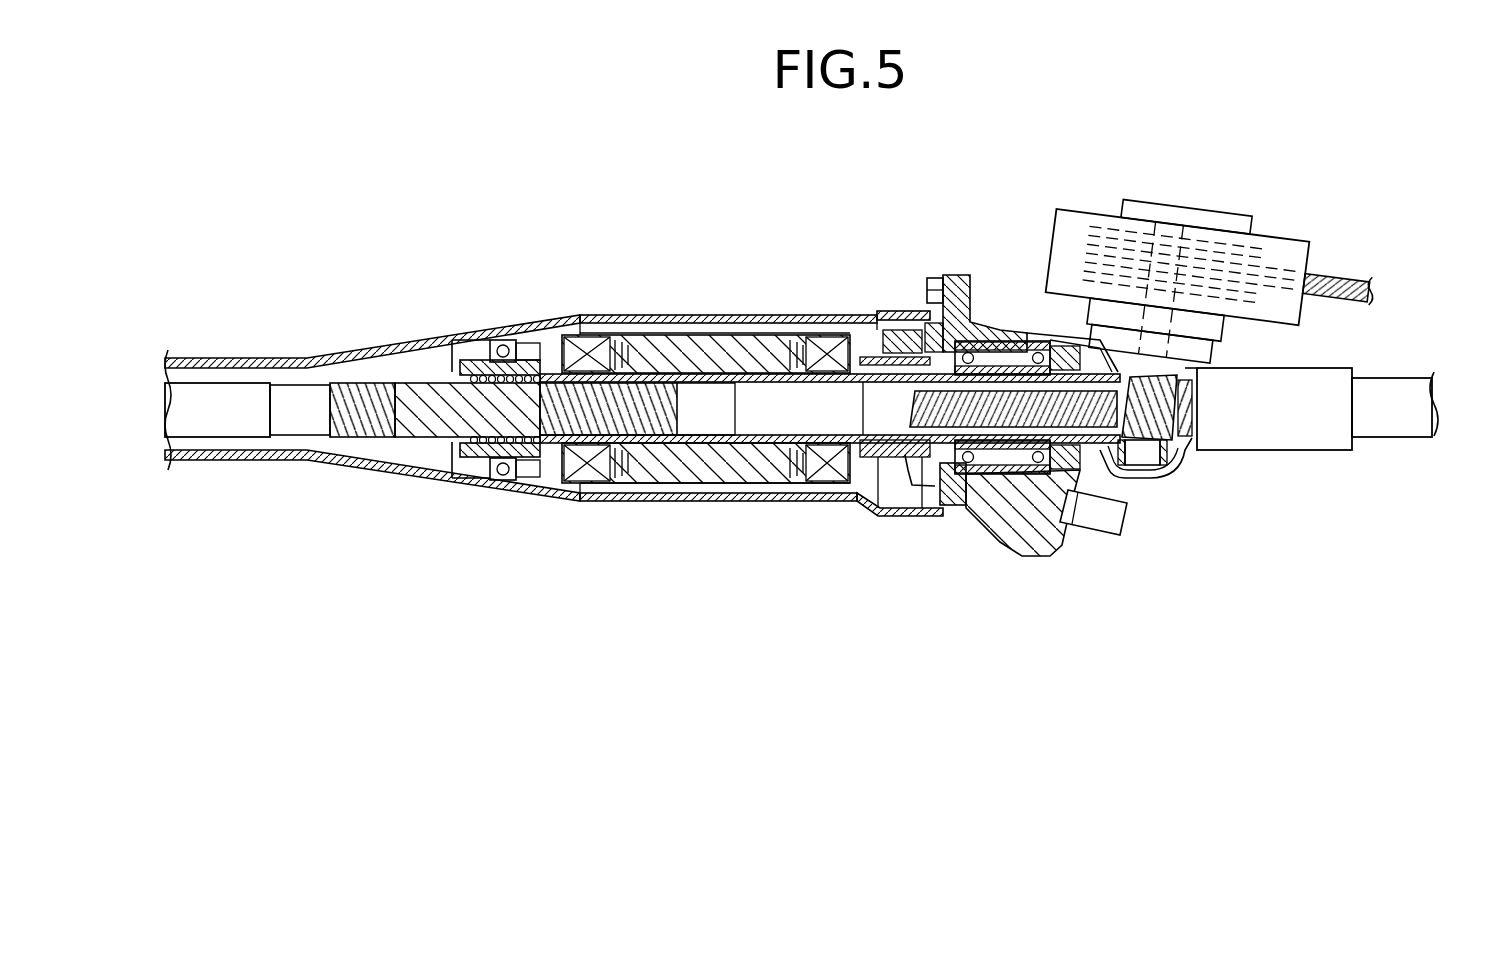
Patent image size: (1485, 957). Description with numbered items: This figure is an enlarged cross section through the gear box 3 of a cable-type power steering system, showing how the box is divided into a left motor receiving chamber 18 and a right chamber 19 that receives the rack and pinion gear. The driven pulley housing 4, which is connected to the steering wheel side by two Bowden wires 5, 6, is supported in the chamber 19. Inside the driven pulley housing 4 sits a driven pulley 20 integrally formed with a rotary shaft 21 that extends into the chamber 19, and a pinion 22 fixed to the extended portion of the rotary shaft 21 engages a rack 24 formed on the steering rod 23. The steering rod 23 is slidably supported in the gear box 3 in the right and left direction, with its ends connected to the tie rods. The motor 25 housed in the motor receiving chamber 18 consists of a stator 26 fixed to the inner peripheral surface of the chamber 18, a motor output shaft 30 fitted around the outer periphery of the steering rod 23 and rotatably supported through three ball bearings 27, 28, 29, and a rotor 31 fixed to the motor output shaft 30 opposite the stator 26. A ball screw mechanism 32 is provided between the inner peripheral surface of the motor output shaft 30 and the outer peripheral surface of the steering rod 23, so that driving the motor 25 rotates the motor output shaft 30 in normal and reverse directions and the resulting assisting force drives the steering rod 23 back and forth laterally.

The gear box 3 is at (823, 206).
The driven pulley housing 4 is at (1086, 210).
The Bowden wire 5 is at (1335, 276).
The Bowden wire 6 is at (1317, 325).
The motor receiving chamber 18 is at (830, 308).
The rack and pinion gear receiving chamber 19 is at (993, 312).
The driven pulley 20 is at (1238, 252).
The rotary shaft 21 is at (1198, 238).
The pinion 22 is at (1176, 447).
The steering rod 23 is at (390, 370).
The rack 24 is at (1100, 470).
The motor 25 is at (843, 496).
The stator 26 is at (690, 494).
The ball bearing 27 is at (501, 476).
The ball bearing 28 is at (963, 516).
The ball bearing 29 is at (1012, 530).
The motor output shaft 30 is at (785, 384).
The rotor 31 is at (703, 352).
The ball screw mechanism 32 is at (448, 448).